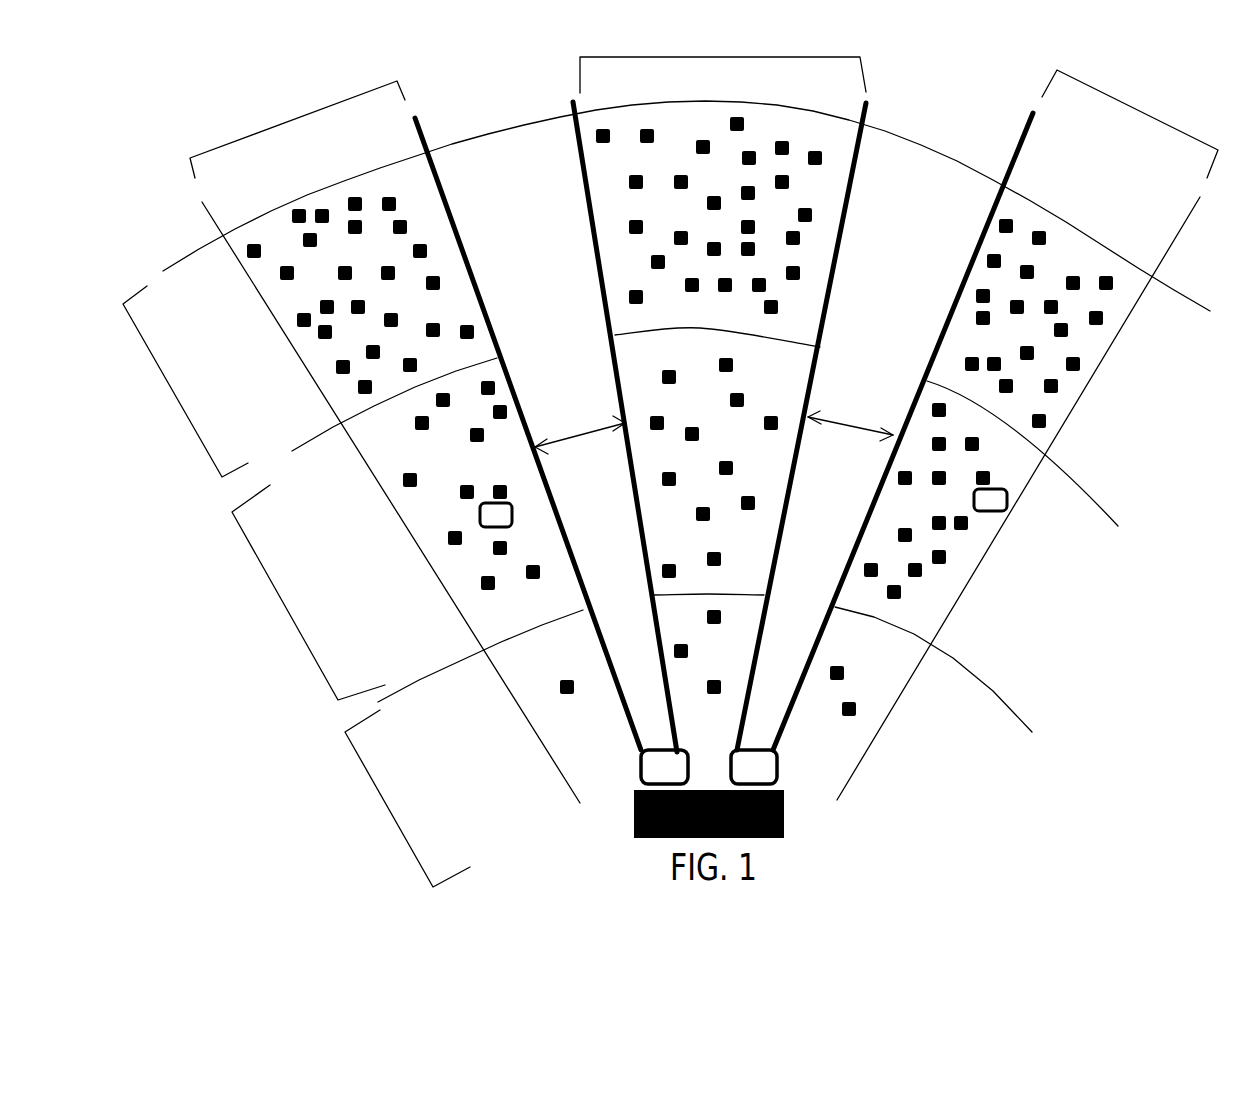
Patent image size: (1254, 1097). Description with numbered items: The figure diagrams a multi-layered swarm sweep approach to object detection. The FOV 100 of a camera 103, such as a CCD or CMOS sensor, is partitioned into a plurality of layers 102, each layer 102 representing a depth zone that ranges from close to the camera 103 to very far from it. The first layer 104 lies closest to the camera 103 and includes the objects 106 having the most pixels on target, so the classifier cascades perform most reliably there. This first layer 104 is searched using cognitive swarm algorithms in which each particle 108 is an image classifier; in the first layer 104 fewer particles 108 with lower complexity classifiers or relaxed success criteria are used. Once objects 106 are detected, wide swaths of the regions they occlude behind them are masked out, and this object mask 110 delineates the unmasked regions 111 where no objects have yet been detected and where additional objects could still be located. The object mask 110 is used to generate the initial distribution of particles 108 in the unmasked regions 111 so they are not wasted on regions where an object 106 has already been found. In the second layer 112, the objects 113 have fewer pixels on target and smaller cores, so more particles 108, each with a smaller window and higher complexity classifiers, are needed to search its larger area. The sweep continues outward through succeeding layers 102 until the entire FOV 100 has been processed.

The FOV 100 is at (234, 95).
The layers 102 is at (167, 391).
The camera 103 is at (784, 812).
The first layer 104 is at (387, 808).
The objects 106 is at (640, 773).
The particles 108 is at (1073, 364).
The object mask 110 is at (582, 435).
The unmasked regions 111 is at (292, 117).
The second layer 112 is at (292, 615).
The objects 113 is at (488, 527).